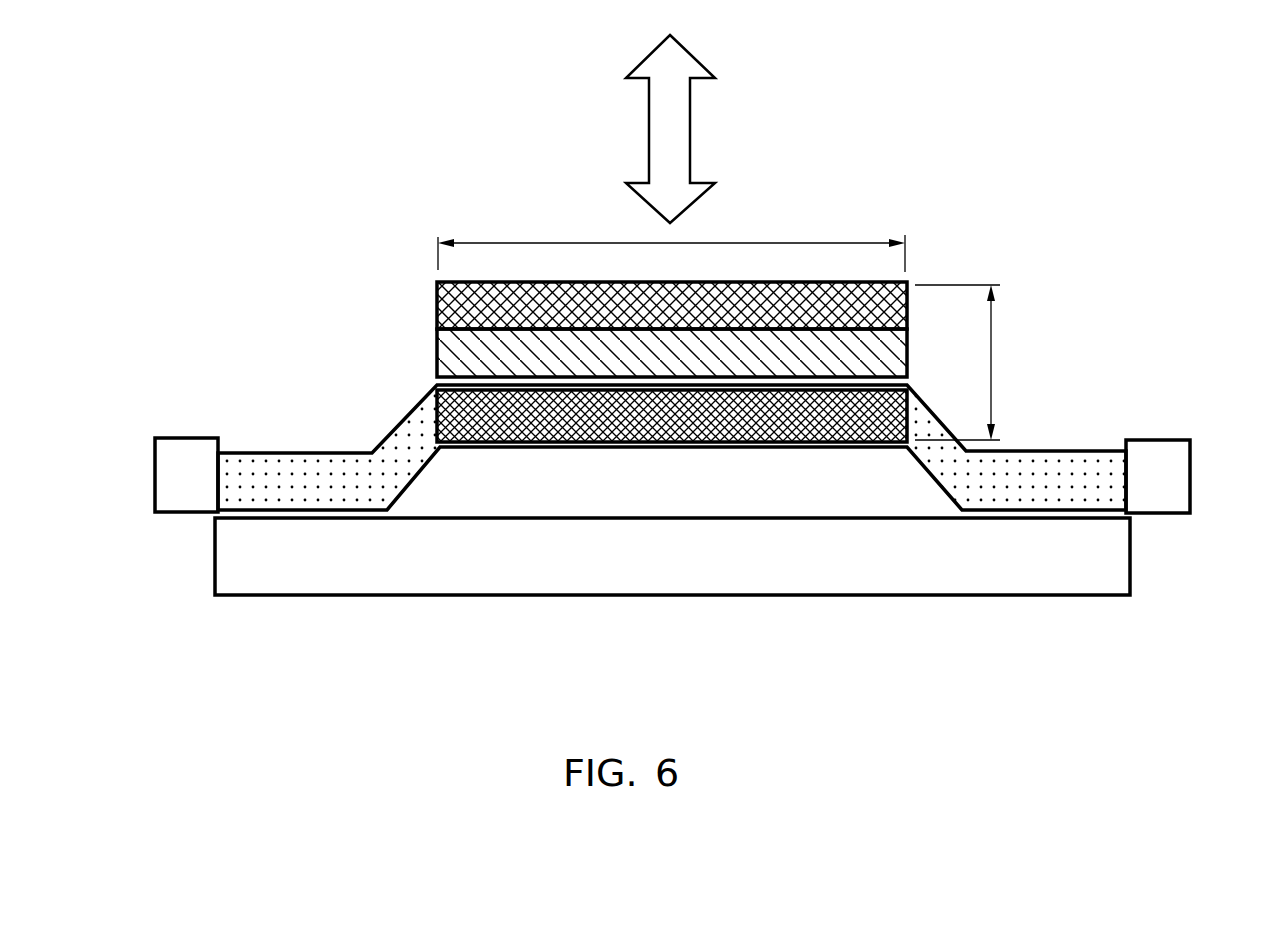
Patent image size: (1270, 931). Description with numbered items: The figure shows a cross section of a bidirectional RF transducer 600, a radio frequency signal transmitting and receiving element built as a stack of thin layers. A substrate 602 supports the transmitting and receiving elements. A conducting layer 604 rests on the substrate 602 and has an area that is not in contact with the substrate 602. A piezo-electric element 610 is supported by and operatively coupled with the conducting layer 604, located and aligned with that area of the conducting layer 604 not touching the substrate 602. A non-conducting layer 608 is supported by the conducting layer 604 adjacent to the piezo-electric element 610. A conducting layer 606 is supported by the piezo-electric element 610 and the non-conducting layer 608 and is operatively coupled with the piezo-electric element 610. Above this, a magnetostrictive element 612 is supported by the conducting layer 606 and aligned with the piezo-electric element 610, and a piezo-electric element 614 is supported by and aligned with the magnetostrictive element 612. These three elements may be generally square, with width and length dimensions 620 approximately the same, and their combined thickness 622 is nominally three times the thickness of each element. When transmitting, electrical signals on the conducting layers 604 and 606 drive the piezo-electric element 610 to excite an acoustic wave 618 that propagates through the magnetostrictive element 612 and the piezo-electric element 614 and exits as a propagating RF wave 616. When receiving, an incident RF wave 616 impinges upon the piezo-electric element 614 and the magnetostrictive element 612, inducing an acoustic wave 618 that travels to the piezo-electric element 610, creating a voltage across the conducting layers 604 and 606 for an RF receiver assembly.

The bidirectional RF transducer 600 is at (392, 173).
The substrate 602 is at (213, 553).
The conducting layer 604 is at (220, 507).
The conducting layer 606 is at (223, 453).
The non-conducting layer 608 is at (1127, 488).
The piezo-electric element 610 is at (430, 392).
The magnetostrictive element 612 is at (438, 347).
The piezo-electric element 614 is at (438, 295).
The RF wave 616 is at (649, 127).
The acoustic wave 618 is at (460, 375).
The width and length dimensions 620 is at (768, 240).
The combined thickness 622 is at (992, 385).